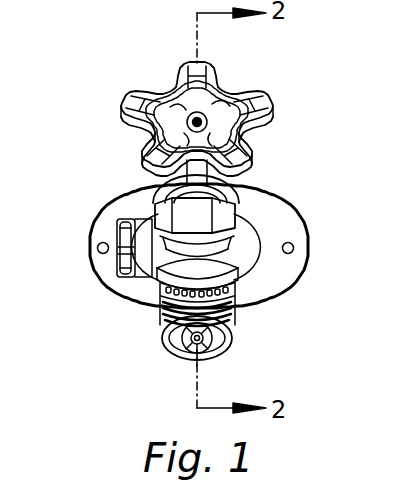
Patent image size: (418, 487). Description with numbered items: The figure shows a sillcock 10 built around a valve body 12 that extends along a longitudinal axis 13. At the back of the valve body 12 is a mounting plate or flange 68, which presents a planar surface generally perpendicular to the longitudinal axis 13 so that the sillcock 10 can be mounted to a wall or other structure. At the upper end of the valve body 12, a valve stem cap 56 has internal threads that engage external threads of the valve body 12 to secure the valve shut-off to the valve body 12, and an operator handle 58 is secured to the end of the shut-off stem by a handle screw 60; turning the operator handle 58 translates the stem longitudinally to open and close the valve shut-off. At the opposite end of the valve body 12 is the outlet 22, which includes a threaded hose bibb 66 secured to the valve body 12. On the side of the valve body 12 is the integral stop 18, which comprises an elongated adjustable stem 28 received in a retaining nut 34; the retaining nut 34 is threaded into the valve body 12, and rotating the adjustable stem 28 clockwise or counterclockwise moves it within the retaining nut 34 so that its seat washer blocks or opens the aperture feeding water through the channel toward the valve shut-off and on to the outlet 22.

The sillcock 10 is at (337, 55).
The valve body 12 is at (140, 217).
The longitudinal axis 13 is at (409, 238).
The integral stop 18 is at (103, 159).
The outlet 22 is at (140, 296).
The elongated adjustable stem 28 is at (97, 245).
The retaining nut 34 is at (120, 217).
The valve stem cap 56 is at (262, 186).
The operator handle 58 is at (153, 88).
The handle screw 60 is at (238, 94).
The threaded hose bibb 66 is at (218, 346).
The mounting plate or flange 68 is at (286, 222).